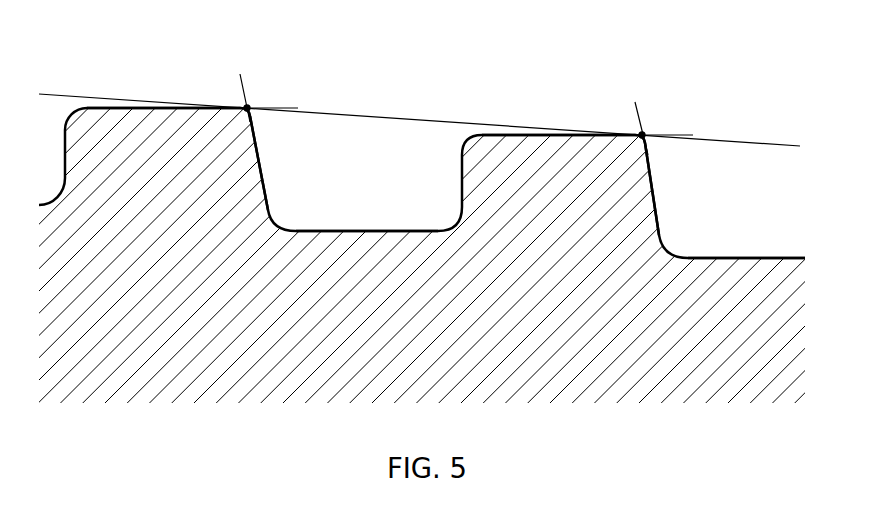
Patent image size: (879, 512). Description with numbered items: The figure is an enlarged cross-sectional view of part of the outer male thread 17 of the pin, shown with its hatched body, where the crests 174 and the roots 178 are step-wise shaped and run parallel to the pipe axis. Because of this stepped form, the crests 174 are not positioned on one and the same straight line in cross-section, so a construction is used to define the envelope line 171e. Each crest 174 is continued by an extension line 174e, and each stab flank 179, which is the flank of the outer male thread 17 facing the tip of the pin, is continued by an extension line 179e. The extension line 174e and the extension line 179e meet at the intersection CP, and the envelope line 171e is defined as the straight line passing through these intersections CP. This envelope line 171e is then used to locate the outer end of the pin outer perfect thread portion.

The outer male thread 17 is at (138, 140).
The crests 174 is at (161, 107).
The extension line of the crests 174e is at (290, 107).
The envelope line 171e is at (398, 118).
The roots 178 is at (378, 231).
The stab flank 179 is at (262, 175).
The extension line of the stab flank 179e is at (243, 77).
The intersection CP is at (250, 106).